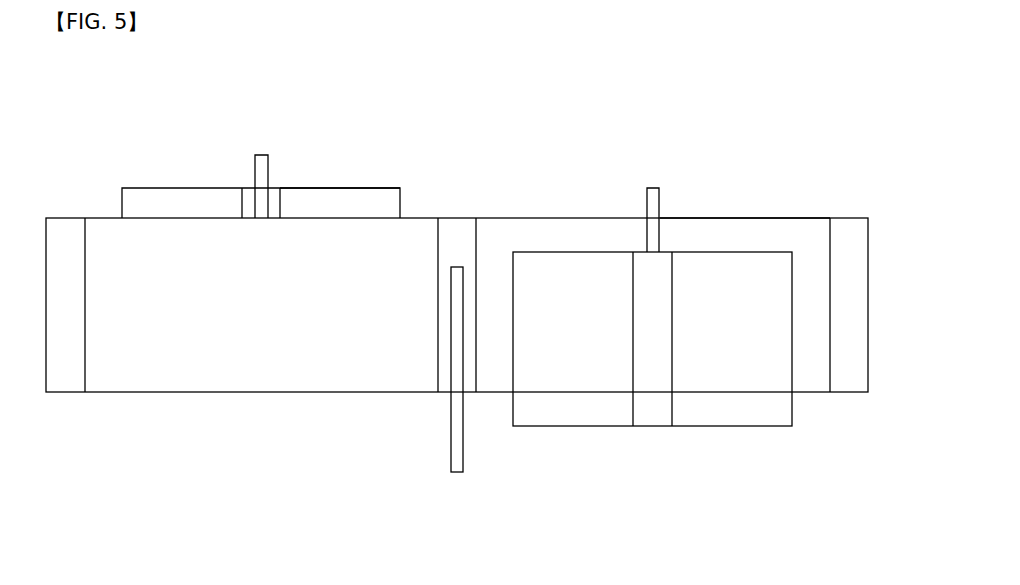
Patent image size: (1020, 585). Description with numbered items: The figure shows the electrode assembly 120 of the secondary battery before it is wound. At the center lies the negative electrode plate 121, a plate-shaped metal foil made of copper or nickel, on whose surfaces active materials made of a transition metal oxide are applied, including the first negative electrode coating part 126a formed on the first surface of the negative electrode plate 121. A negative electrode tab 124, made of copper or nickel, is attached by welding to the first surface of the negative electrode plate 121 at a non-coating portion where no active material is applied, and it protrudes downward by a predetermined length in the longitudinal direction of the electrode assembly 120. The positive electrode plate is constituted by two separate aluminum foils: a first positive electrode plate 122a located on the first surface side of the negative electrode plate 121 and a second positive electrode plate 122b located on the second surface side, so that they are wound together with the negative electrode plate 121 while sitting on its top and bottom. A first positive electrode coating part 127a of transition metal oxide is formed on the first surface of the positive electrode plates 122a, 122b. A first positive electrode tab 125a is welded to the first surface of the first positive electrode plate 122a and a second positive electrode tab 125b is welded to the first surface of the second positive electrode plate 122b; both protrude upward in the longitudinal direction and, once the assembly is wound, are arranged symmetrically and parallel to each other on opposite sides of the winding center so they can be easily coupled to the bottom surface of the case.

The electrode assembly 120 is at (869, 161).
The negative electrode plate 121 is at (68, 392).
The first positive electrode plate 122a is at (775, 436).
The second positive electrode plate 122b is at (167, 174).
The negative electrode tab 124 is at (457, 472).
The first positive electrode tab 125a is at (652, 188).
The second positive electrode tab 125b is at (261, 155).
The first negative electrode coating part 126a is at (257, 392).
The first positive electrode coating part 127a is at (351, 188).